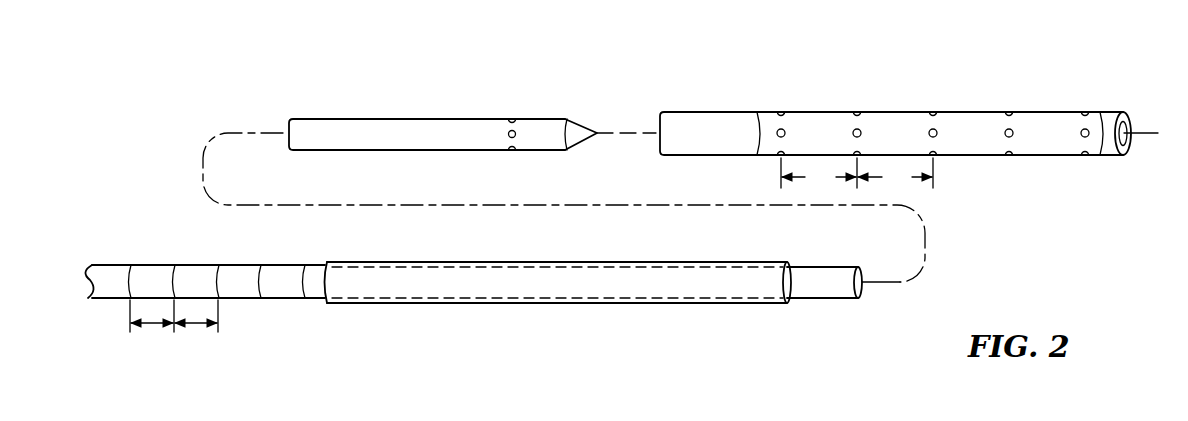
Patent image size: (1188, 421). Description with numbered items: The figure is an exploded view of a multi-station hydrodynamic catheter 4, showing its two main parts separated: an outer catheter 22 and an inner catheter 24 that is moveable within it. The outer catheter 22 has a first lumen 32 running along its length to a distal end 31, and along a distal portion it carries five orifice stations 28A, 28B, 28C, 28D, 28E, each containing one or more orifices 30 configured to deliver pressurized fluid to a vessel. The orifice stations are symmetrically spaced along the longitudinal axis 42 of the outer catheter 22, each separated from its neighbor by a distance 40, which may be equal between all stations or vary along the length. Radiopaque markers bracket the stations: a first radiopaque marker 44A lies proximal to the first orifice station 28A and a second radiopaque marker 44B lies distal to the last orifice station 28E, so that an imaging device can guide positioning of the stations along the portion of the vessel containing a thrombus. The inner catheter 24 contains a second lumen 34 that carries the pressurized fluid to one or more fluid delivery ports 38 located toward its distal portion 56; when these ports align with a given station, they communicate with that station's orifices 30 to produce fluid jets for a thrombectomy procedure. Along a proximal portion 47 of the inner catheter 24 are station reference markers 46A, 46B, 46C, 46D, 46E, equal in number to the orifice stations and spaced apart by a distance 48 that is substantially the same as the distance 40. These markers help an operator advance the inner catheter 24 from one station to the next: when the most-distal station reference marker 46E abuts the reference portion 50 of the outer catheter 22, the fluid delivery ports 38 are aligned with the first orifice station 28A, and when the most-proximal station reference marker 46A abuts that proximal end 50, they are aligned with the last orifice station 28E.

The multi-station hydrodynamic catheter 4 is at (638, 94).
The outer catheter 22 is at (709, 112).
The inner catheter 24 is at (406, 118).
The first orifice station 28A is at (778, 108).
The orifice station 28B is at (854, 108).
The orifice station 28C is at (930, 108).
The orifice station 28D is at (1006, 108).
The last orifice station 28E is at (1082, 108).
The orifice 30 is at (1013, 137).
The distal end 31 is at (1138, 150).
The first lumen 32 is at (1125, 125).
The second lumen 34 is at (862, 300).
The fluid delivery port 38 is at (508, 114).
The distance 40 is at (857, 173).
The longitudinal axis 42 is at (260, 132).
The first radiopaque marker 44A is at (758, 147).
The second radiopaque marker 44B is at (1103, 146).
The most-proximal station reference marker 46A is at (130, 264).
The station reference marker 46B is at (174, 264).
The station reference marker 46C is at (218, 264).
The station reference marker 46D is at (260, 264).
The most-distal station reference marker 46E is at (304, 264).
The proximal portion 47 is at (153, 222).
The distance 48 is at (152, 326).
The reference portion 50 is at (327, 303).
The distal portion 56 is at (574, 107).